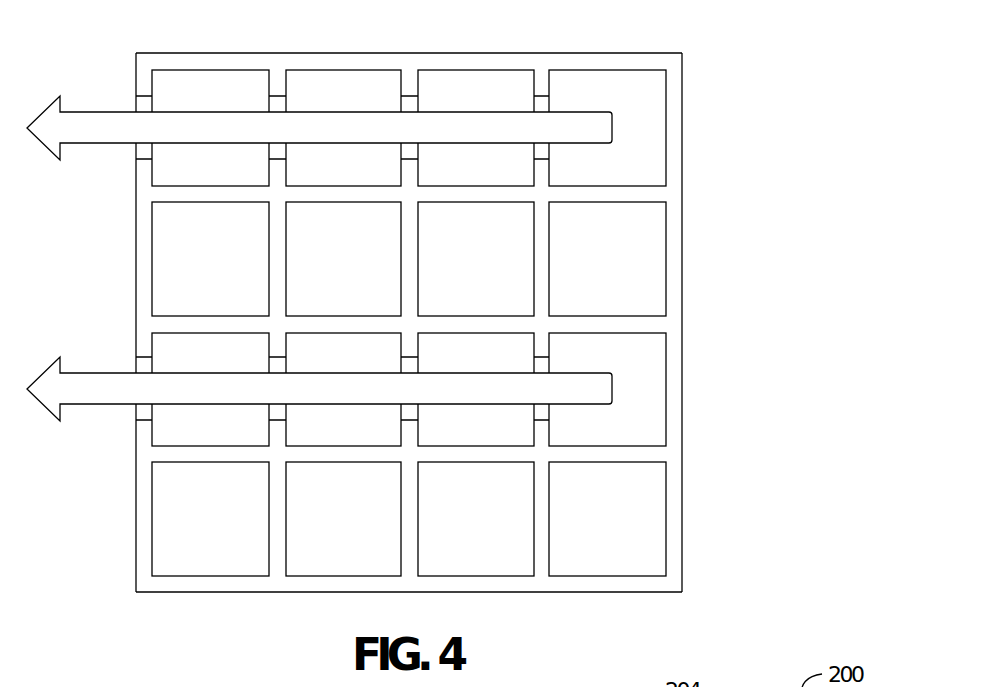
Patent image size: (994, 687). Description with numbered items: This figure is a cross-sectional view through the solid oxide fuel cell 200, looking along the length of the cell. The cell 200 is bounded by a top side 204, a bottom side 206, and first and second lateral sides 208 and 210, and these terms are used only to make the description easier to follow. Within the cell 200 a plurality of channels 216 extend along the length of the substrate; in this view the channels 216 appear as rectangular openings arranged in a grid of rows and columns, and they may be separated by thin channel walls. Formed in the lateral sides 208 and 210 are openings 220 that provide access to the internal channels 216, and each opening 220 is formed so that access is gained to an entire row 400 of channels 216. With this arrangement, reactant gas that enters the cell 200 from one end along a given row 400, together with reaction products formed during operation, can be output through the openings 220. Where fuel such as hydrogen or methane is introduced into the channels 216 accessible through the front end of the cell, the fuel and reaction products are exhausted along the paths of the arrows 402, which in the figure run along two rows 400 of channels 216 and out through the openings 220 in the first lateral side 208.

The fuel cell 200 is at (445, 327).
The top side 204 is at (628, 52).
The bottom side 206 is at (590, 594).
The first lateral side 208 is at (136, 308).
The second lateral side 210 is at (683, 371).
The channels 216 is at (627, 270).
The openings 220 is at (116, 160).
The row 400 is at (700, 119).
The arrows 402 is at (293, 128).